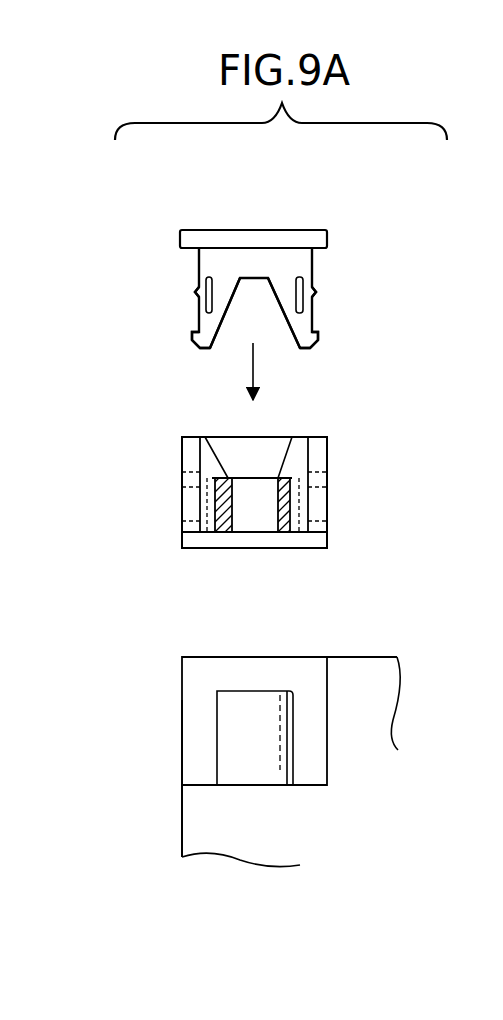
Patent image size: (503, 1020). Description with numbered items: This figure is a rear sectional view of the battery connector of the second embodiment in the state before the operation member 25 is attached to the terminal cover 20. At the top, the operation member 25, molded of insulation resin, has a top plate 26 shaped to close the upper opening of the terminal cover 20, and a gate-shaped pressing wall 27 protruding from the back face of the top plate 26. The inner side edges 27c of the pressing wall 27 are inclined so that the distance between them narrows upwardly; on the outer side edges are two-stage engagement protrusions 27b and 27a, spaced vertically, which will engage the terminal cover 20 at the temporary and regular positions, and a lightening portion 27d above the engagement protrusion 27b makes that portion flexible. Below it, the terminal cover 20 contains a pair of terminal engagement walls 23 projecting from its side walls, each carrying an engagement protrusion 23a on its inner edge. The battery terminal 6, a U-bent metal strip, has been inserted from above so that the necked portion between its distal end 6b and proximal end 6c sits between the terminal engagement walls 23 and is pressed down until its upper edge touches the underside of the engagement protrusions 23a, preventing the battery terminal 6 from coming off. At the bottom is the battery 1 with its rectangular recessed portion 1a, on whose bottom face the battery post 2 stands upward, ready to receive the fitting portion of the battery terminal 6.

The battery 1 is at (262, 738).
The recessed portion 1a is at (200, 762).
The battery post 2 is at (227, 707).
The battery terminal 6 is at (258, 505).
The distal end 6b is at (289, 530).
The proximal end 6c is at (227, 530).
The terminal cover 20 is at (257, 505).
The terminal engagement wall 23 is at (198, 455).
The engagement protrusion 23a is at (228, 478).
The operation member 25 is at (257, 274).
The top plate 26 is at (240, 228).
The pressing wall 27 is at (313, 254).
The engagement protrusion 27a is at (192, 336).
The engagement protrusion 27b is at (196, 291).
The inner side edge 27c is at (220, 340).
The lightening portion 27d is at (205, 280).